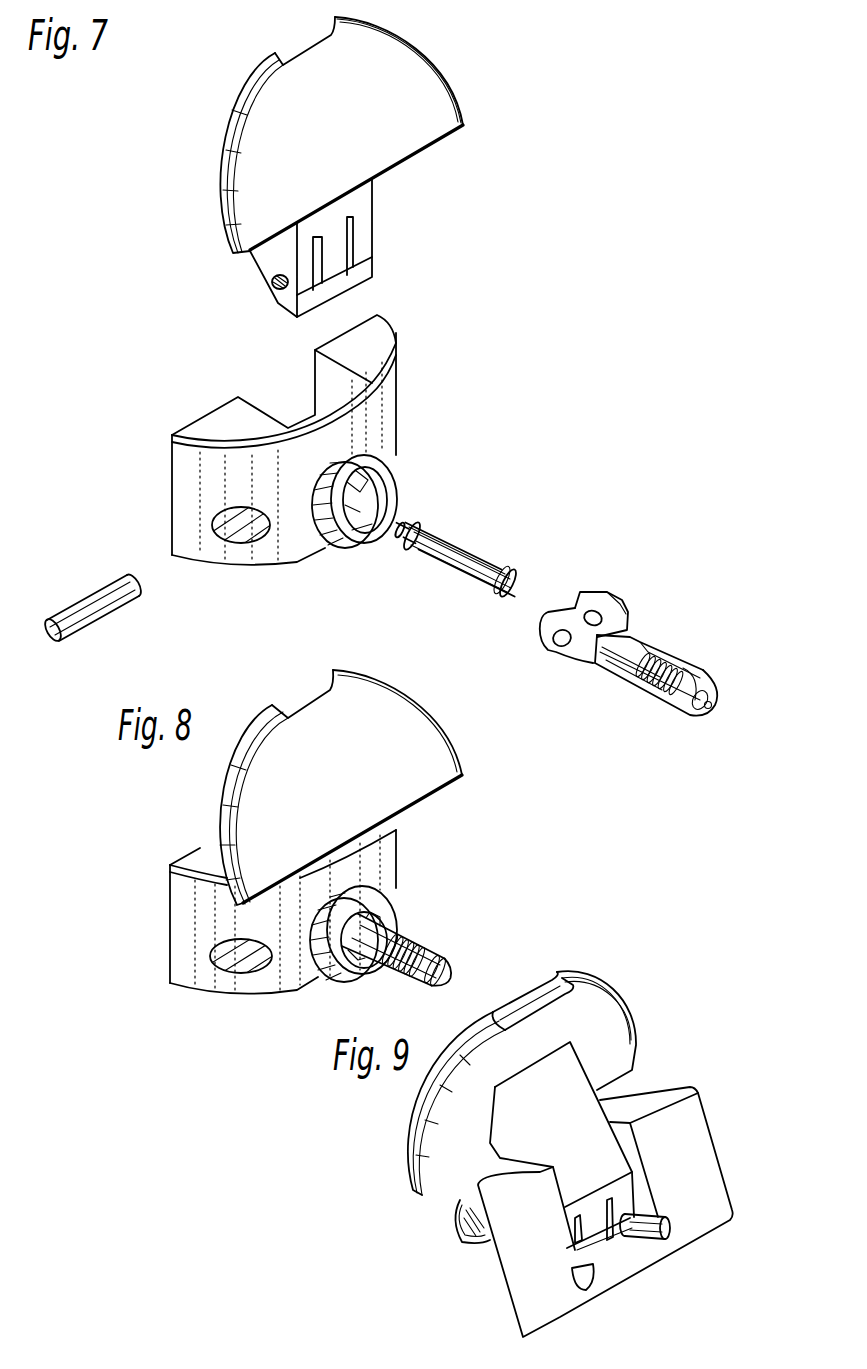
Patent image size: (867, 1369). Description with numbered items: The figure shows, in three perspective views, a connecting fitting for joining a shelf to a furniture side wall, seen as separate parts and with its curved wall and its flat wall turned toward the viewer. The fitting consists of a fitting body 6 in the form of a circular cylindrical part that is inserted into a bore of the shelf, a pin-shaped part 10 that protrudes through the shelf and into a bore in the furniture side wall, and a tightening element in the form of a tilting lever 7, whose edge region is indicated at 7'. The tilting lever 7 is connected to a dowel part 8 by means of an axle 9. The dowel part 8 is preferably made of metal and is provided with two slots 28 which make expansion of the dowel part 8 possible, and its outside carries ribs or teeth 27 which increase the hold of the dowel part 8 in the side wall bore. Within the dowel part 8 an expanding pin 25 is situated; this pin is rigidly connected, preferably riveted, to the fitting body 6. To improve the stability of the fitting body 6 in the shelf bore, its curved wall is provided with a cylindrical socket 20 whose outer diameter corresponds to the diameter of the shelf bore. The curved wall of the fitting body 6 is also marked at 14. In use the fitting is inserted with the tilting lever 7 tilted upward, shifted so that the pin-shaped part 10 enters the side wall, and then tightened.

In FIG. 7, the fitting body 6 is at (373, 337).
In FIG. 8, the fitting body 6 is at (165, 928).
In FIG. 9, the fitting body 6 is at (672, 1122).
In FIG. 7, the tilting lever 7 is at (412, 167).
In FIG. 8, the tilting lever 7 is at (358, 786).
In FIG. 9, the tilting lever 7 is at (533, 1042).
In FIG. 7, the rim edge of cap 7' is at (441, 64).
In FIG. 9, the rim edge of cap 7' is at (655, 1001).
In FIG. 7, the dowel part 8 is at (612, 602).
In FIG. 7, the axle 9 is at (107, 600).
In FIG. 8, the pin-shaped part 10 is at (443, 945).
In FIG. 7, the curved front face of body 14 is at (373, 425).
In FIG. 8, the curved front face of body 14 is at (208, 977).
In FIG. 7, the socket 20 is at (393, 493).
In FIG. 8, the socket 20 is at (370, 908).
In FIG. 7, the expanding pin 25 is at (447, 553).
In FIG. 7, the ribs or teeth 27 is at (650, 687).
In FIG. 7, the slots 28 is at (685, 663).